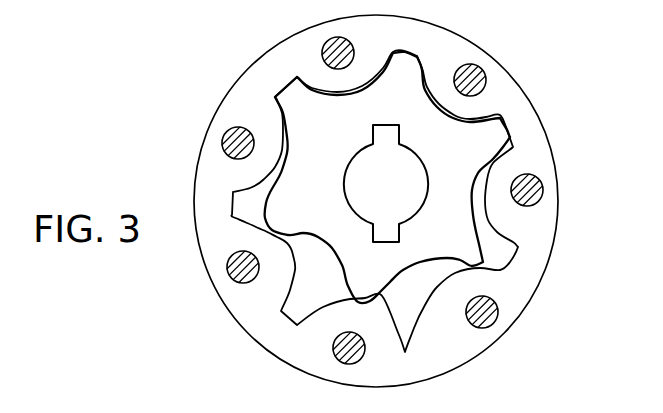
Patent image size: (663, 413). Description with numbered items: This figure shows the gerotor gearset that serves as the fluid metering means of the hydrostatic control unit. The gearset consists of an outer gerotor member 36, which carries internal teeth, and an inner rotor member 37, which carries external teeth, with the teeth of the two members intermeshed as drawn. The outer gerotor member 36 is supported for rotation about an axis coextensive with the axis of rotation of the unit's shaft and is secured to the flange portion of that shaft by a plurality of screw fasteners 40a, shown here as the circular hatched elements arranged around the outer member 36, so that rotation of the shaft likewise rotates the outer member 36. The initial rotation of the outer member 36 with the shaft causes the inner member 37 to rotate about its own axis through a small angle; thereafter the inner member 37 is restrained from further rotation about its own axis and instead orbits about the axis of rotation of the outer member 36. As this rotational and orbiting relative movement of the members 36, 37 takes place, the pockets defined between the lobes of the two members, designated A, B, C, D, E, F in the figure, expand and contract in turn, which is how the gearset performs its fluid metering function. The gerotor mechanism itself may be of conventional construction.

The outer gerotor member 36 is at (512, 104).
The inner gerotor member 37 is at (460, 170).
The screw fasteners 40a is at (326, 52).
The pocket A is at (370, 92).
The pocket B is at (448, 120).
The pocket C is at (474, 208).
The pocket D is at (406, 282).
The pocket E is at (312, 258).
The pocket F is at (285, 168).